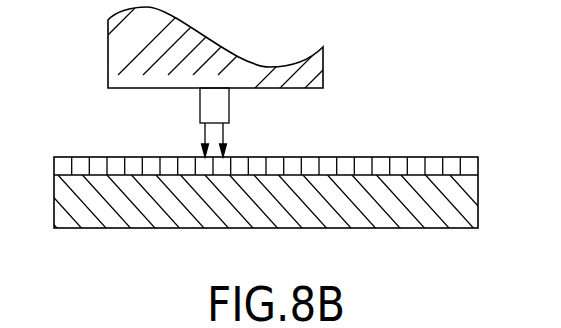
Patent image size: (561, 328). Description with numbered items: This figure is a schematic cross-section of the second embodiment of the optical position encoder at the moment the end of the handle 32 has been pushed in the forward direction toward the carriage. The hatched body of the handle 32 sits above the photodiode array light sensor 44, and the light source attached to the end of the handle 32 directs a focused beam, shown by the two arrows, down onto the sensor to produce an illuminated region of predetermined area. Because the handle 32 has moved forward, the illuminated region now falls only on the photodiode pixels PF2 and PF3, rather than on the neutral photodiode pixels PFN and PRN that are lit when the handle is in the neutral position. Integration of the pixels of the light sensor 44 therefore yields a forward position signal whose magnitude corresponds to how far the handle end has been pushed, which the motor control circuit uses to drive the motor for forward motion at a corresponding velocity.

The handle 32 is at (117, 61).
The light sensor 44 is at (457, 224).
The neutral photodiode pixel PFN is at (255, 167).
The neutral photodiode pixel PRN is at (277, 163).
The photodiode pixel PF3 is at (205, 174).
The photodiode pixel PF2 is at (222, 174).